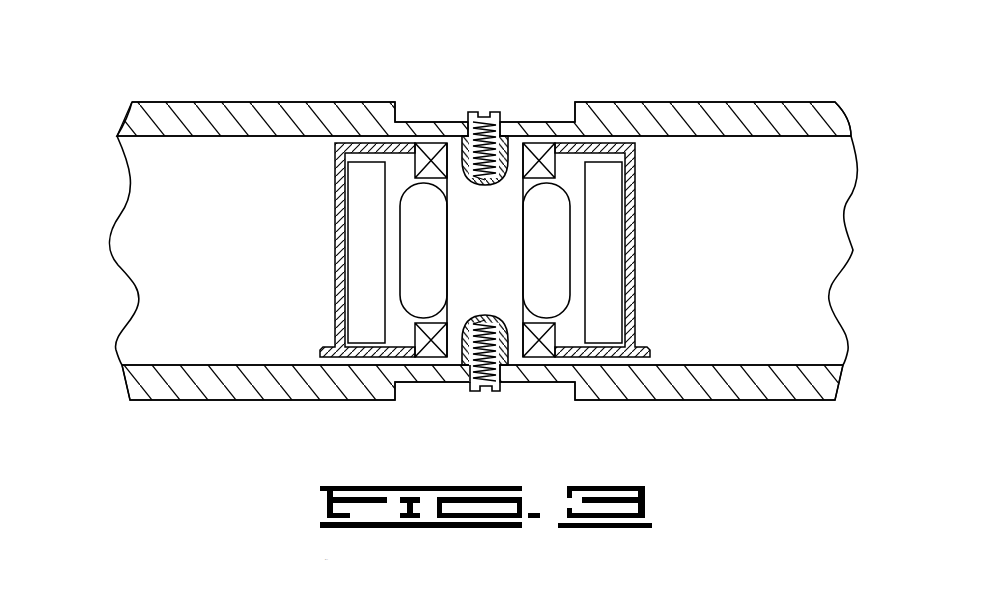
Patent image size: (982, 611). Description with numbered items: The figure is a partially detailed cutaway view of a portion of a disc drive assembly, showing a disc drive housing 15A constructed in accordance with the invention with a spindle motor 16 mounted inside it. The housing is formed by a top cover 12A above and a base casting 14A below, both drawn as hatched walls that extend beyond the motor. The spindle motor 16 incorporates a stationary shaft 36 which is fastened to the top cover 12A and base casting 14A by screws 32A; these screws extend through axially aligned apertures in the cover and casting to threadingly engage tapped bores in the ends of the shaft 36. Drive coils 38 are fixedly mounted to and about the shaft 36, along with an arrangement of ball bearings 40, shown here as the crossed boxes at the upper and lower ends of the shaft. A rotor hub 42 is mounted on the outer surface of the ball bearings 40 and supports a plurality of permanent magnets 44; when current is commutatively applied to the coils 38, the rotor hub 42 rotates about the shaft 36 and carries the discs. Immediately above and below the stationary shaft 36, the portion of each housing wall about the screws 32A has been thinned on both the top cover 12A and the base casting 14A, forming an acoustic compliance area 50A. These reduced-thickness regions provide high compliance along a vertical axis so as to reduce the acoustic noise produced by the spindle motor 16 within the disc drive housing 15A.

The top cover 12A is at (203, 102).
The base casting 14A is at (228, 398).
The disc drive housing 15A is at (679, 98).
The spindle motor 16 is at (190, 236).
The screws 32A is at (472, 113).
The stationary shaft 36 is at (493, 255).
The drive coils 38 is at (415, 253).
The ball bearings 40 is at (423, 148).
The rotor hub 42 is at (335, 202).
The permanent magnets 44 is at (362, 315).
The acoustic compliance area 50A is at (448, 108).